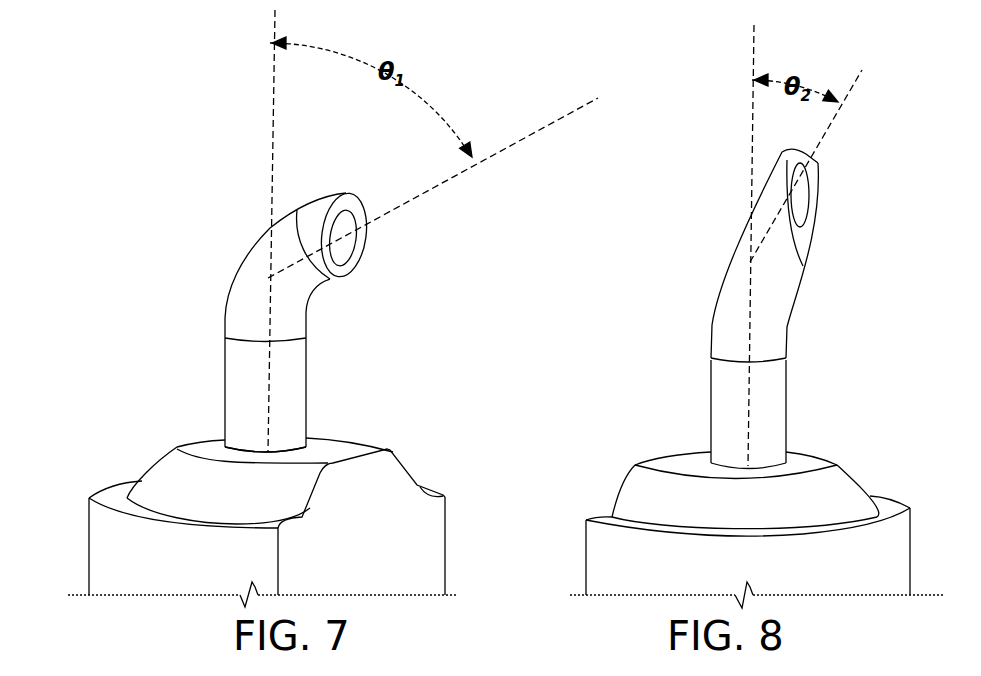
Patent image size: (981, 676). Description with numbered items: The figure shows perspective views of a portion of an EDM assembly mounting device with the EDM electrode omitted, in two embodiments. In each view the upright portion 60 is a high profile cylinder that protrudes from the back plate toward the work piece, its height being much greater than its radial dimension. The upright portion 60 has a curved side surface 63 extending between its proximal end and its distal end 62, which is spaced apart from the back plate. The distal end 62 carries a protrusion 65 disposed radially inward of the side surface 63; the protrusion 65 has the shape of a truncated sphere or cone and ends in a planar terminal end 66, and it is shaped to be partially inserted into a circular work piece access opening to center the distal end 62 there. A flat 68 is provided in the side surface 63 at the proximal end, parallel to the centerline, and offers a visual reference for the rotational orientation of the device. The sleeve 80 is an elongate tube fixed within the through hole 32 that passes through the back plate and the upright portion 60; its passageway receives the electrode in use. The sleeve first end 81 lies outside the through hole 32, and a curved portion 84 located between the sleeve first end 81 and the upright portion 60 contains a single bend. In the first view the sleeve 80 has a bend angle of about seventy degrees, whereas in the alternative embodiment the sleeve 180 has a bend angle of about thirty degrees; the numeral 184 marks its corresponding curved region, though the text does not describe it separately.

In FIG. 7, the through hole 32 is at (308, 436).
In FIG. 7, the upright portion 60 is at (237, 544).
In FIG. 8, the upright portion 60 is at (754, 568).
In FIG. 7, the distal end 62 is at (443, 492).
In FIG. 7, the curved side surface 63 is at (96, 566).
In FIG. 8, the curved side surface 63 is at (622, 589).
In FIG. 7, the protrusion 65 is at (160, 477).
In FIG. 8, the protrusion 65 is at (847, 490).
In FIG. 7, the planar terminal end 66 is at (208, 440).
In FIG. 8, the planar terminal end 66 is at (677, 462).
In FIG. 7, the flat 68 is at (380, 541).
In FIG. 8, the flat 68 is at (613, 498).
In FIG. 7, the sleeve 80 is at (294, 300).
In FIG. 7, the sleeve first end 81 is at (334, 193).
In FIG. 7, the curved portion 84 is at (248, 270).
In FIG. 8, the alternative embodiment sleeve 180 is at (767, 308).
In FIG. 8, the bent nozzle portion 184 is at (725, 268).